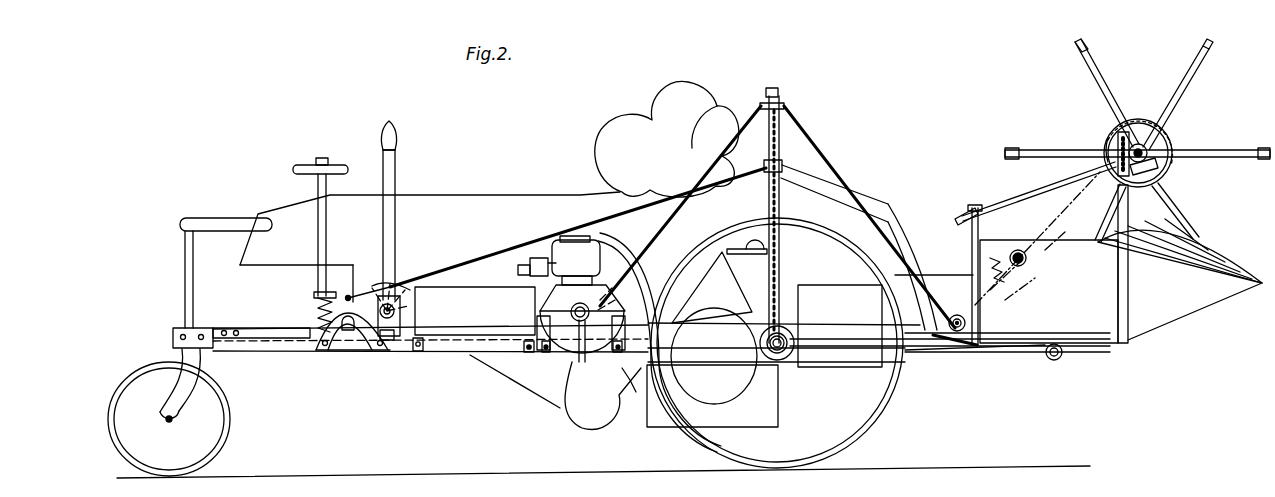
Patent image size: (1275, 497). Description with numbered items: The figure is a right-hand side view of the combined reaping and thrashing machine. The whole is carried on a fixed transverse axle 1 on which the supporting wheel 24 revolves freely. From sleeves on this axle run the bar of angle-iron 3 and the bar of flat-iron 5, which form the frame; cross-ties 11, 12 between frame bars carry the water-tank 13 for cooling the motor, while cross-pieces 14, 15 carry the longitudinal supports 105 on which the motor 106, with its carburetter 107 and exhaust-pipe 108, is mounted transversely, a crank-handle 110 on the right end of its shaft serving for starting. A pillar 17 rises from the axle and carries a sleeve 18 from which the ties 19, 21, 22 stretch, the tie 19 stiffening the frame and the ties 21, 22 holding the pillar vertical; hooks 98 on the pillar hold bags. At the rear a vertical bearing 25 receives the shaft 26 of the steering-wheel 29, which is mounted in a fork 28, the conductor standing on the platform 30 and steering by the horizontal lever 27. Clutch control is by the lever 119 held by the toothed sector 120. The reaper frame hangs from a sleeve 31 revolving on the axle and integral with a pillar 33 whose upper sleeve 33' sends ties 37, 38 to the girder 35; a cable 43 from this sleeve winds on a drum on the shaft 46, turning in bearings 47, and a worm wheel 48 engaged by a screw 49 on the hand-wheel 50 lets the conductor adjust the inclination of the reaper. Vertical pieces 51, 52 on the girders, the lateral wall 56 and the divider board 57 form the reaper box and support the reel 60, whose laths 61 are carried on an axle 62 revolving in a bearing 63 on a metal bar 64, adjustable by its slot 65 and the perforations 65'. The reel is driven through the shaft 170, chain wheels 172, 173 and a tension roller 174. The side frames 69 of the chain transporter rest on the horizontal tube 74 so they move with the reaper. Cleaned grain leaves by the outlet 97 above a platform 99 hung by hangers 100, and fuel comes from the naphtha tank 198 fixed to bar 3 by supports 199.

The fixed transverse axle 1 is at (782, 352).
The bar of angle-iron 3 is at (462, 353).
The bar of flat-iron 5 is at (643, 384).
The cross-tie 11 is at (421, 353).
The cross-tie 12 is at (526, 352).
The water-tank 13 is at (475, 311).
The cross-piece 14 is at (546, 353).
The cross-piece 15 is at (612, 352).
The pillar 17 is at (775, 88).
The sleeve 18 is at (785, 105).
The tie 19 is at (781, 130).
The tie 21 is at (815, 150).
The tie 22 is at (757, 110).
The supporting wheel 24 is at (878, 418).
The vertical bearing 25 is at (183, 333).
The shaft of the steering-wheel 26 is at (185, 252).
The horizontal lever 27 is at (215, 218).
The fork 28 is at (203, 380).
The steering-wheel 29 is at (229, 417).
The platform 30 is at (246, 330).
The sleeve 31 is at (806, 352).
The pillar 33 is at (837, 196).
The sleeve 33' is at (826, 175).
The girder 35 is at (935, 353).
The tie 37 is at (870, 209).
The tie 38 is at (876, 224).
The cable 43 is at (514, 246).
The shaft 46 is at (347, 292).
The bearings 47 is at (340, 352).
The worm wheel 48 is at (385, 302).
The screw 49 is at (312, 302).
The hand-wheel 50 is at (306, 170).
The vertical piece 51 is at (978, 208).
The vertical piece 52 is at (1110, 215).
The lateral wall 56 is at (1116, 343).
The divider board 57 is at (1222, 260).
The reel 60 is at (1185, 96).
The rods or laths of wood 61 is at (1090, 46).
The axle 62 is at (1142, 145).
The bearing 63 is at (1162, 142).
The metal bar 64 is at (1043, 196).
The longitudinal slot 65 is at (957, 208).
The perforations 65' is at (1094, 131).
The side frames 69 is at (946, 283).
The horizontal tube 74 is at (1054, 360).
The outlet 97 is at (728, 200).
The hooks 98 is at (750, 255).
The platform 99 is at (720, 428).
The hangers 100 is at (650, 428).
The longitudinal supports 105 is at (537, 320).
The motor 106 is at (582, 299).
The carburetter 107 is at (538, 258).
The exhaust-pipe 108 is at (625, 370).
The crank-handle 110 is at (572, 360).
The lever 119 is at (393, 162).
The toothed sector 120 is at (398, 300).
The shaft 170 is at (967, 325).
The chain wheel 172 is at (955, 348).
The chain wheel 173 is at (1110, 140).
The tension roller 174 is at (1020, 268).
The naphtha tank 198 is at (840, 326).
The supports 199 is at (840, 352).